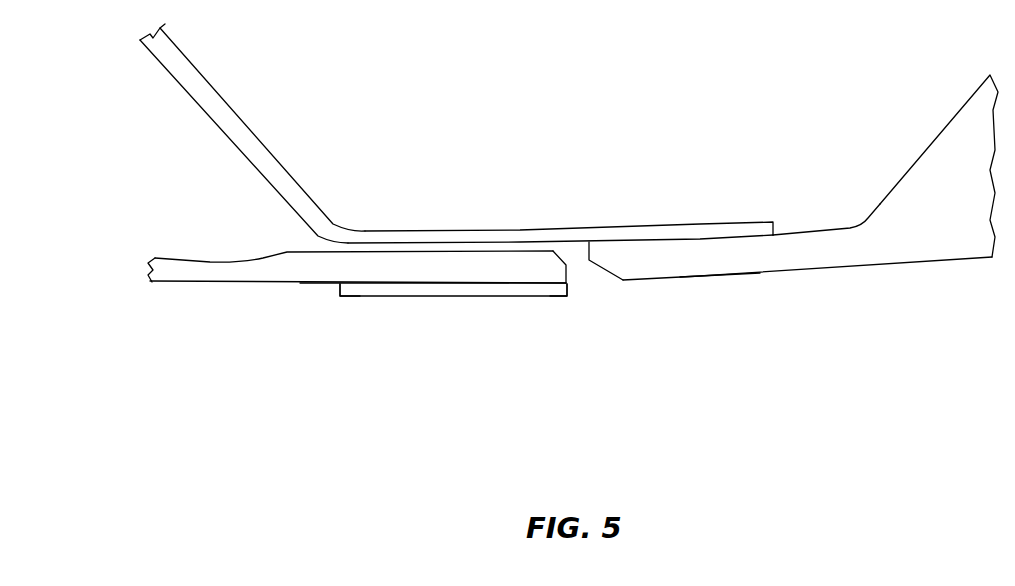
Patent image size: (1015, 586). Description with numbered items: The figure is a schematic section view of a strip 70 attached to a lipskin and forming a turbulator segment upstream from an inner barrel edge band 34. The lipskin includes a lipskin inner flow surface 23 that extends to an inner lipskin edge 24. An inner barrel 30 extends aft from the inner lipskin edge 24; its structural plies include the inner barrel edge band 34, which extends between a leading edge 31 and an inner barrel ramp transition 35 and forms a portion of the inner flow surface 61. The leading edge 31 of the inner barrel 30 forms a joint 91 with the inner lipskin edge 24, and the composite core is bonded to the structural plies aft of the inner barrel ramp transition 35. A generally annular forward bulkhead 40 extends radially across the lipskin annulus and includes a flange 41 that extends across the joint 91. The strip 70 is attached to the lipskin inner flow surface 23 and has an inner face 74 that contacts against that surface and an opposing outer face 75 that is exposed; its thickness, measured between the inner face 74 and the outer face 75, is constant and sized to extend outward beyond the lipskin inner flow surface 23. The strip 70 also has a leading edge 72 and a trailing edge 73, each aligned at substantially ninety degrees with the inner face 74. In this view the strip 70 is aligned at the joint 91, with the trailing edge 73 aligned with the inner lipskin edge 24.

The lipskin inner flow surface 23 is at (257, 283).
The inner lipskin edge 24 is at (571, 300).
The inner barrel 30 is at (908, 167).
The leading edge 31 is at (584, 263).
The inner barrel edge band 34 is at (800, 272).
The inner barrel ramp transition 35 is at (862, 215).
The forward bulkhead 40 is at (250, 139).
The flange 41 is at (608, 235).
The inner flow surface 61 is at (727, 275).
The strip 70 is at (438, 377).
The leading edge 72 is at (338, 287).
The trailing edge 73 is at (571, 300).
The inner face 74 is at (473, 283).
The outer face 75 is at (398, 300).
The joint 91 is at (581, 306).